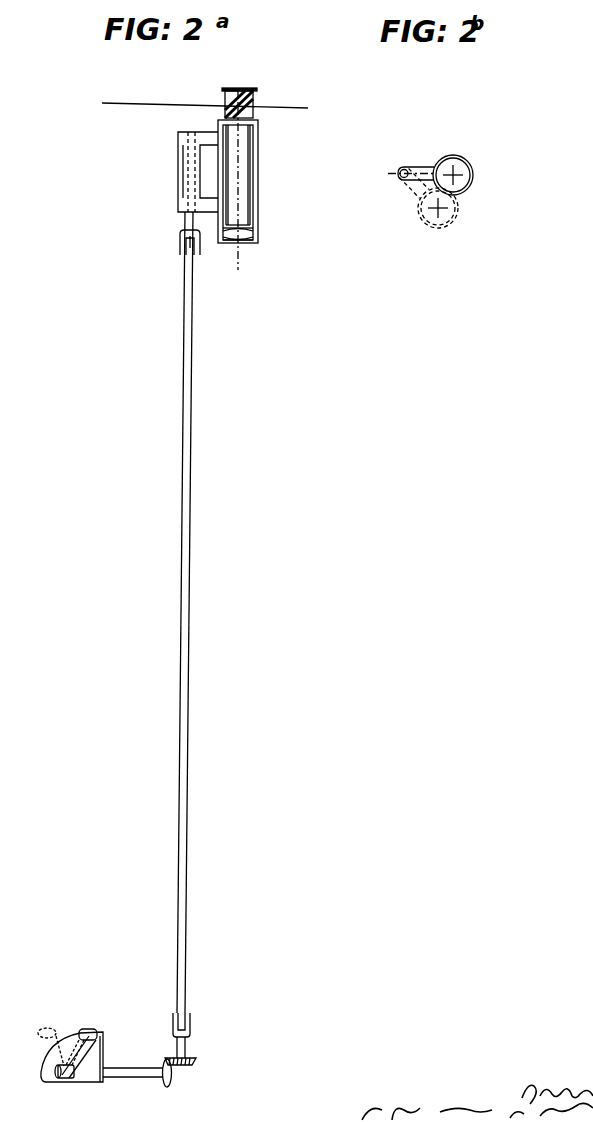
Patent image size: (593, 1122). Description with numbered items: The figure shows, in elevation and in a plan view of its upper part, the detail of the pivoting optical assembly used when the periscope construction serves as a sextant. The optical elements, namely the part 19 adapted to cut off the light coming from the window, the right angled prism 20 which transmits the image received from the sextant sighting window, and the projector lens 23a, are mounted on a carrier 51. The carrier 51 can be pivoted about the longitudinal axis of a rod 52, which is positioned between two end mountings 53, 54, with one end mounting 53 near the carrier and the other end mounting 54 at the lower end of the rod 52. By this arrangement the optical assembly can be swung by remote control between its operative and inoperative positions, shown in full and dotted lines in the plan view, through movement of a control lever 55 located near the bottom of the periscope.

In FIG. 2A, the part 19 is at (224, 89).
In FIG. 2A, the right angled prism 20 is at (187, 103).
In FIG. 2A, the carrier 51 is at (258, 170).
In FIG. 2B, the carrier 51 is at (473, 174).
In FIG. 2A, the projector lens 23a is at (250, 240).
In FIG. 2A, the end mounting 53 is at (188, 218).
In FIG. 2B, the end mounting 53 is at (402, 168).
In FIG. 2A, the rod 52 is at (187, 447).
In FIG. 2A, the end mounting 54 is at (182, 1043).
In FIG. 2A, the control lever 55 is at (97, 1038).